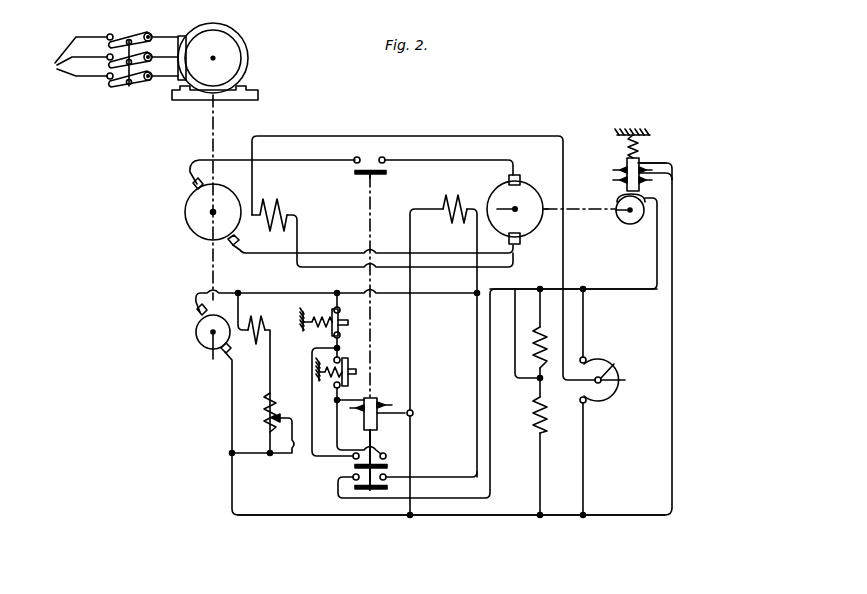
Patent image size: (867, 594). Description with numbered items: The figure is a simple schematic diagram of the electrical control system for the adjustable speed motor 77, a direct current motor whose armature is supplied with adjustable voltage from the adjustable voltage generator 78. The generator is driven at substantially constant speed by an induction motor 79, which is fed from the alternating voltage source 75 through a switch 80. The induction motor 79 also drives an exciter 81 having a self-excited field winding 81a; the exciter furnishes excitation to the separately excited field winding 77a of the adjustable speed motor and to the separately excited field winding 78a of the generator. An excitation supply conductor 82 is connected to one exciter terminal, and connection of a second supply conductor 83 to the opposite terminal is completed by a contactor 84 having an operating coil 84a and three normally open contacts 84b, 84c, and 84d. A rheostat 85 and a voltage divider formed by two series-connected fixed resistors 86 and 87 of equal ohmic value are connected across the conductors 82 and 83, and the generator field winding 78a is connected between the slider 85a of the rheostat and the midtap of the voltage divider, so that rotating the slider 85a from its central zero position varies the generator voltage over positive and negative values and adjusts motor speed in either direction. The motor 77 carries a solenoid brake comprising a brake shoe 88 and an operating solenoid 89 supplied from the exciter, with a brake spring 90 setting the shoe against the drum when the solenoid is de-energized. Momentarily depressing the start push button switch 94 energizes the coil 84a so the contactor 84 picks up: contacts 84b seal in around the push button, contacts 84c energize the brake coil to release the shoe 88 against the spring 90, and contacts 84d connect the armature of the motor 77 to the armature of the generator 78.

The source of alternating voltage 75 is at (72, 56).
The switch 80 is at (129, 86).
The induction motor 79 is at (248, 64).
The adjustable voltage generator 78 is at (185, 204).
The separately excited field winding of the adjustable voltage generator 78a is at (266, 204).
The normally open contacts 84d is at (369, 165).
The adjustable speed motor 77 is at (529, 191).
The separately excited field winding of the adjustable speed motor 77a is at (452, 200).
The brake spring 90 is at (636, 146).
The brake shoe 88 is at (625, 183).
The operating solenoid 89 is at (672, 173).
The second supply conductor 83 is at (611, 290).
The exciter 81 is at (197, 326).
The self-excited field winding 81a is at (252, 328).
The start push button switch 94 is at (349, 355).
The operating coil 84a is at (380, 401).
The contactor 84 is at (376, 437).
The normally open contacts 84b is at (387, 458).
The normally open contacts 84c is at (387, 483).
The fixed resistor 86 is at (538, 326).
The fixed resistor 87 is at (534, 415).
The rheostat 85 is at (618, 396).
The slider 85a is at (616, 362).
The excitation supply conductor 82 is at (455, 521).